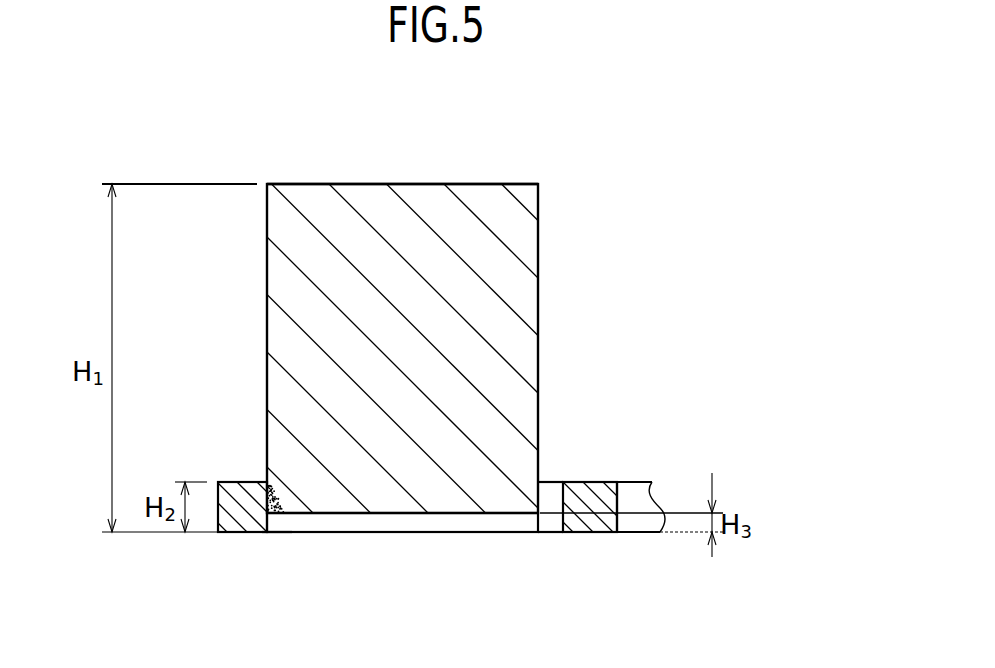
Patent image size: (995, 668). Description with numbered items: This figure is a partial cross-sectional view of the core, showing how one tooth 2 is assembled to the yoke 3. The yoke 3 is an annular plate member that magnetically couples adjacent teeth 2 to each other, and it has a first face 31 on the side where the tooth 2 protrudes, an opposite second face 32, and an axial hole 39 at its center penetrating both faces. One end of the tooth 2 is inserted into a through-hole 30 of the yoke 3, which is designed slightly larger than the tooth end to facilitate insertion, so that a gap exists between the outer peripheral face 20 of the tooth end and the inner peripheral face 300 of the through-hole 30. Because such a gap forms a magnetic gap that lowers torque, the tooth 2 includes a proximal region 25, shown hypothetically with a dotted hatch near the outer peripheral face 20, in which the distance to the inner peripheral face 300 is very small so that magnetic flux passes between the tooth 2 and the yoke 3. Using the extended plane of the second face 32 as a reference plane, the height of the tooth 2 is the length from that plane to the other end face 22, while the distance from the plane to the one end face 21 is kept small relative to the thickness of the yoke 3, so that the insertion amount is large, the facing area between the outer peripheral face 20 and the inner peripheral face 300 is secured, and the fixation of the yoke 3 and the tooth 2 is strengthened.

The tooth 2 is at (525, 240).
The yoke 3 is at (590, 475).
The outer peripheral face 20 is at (542, 498).
The one end face 21 is at (447, 515).
The other end face 22 is at (488, 183).
The proximal region 25 is at (284, 502).
The through-hole 30 is at (277, 531).
The first face 31 is at (240, 482).
The second face 32 is at (248, 533).
The axial hole 39 is at (620, 501).
The inner peripheral face 300 is at (560, 523).